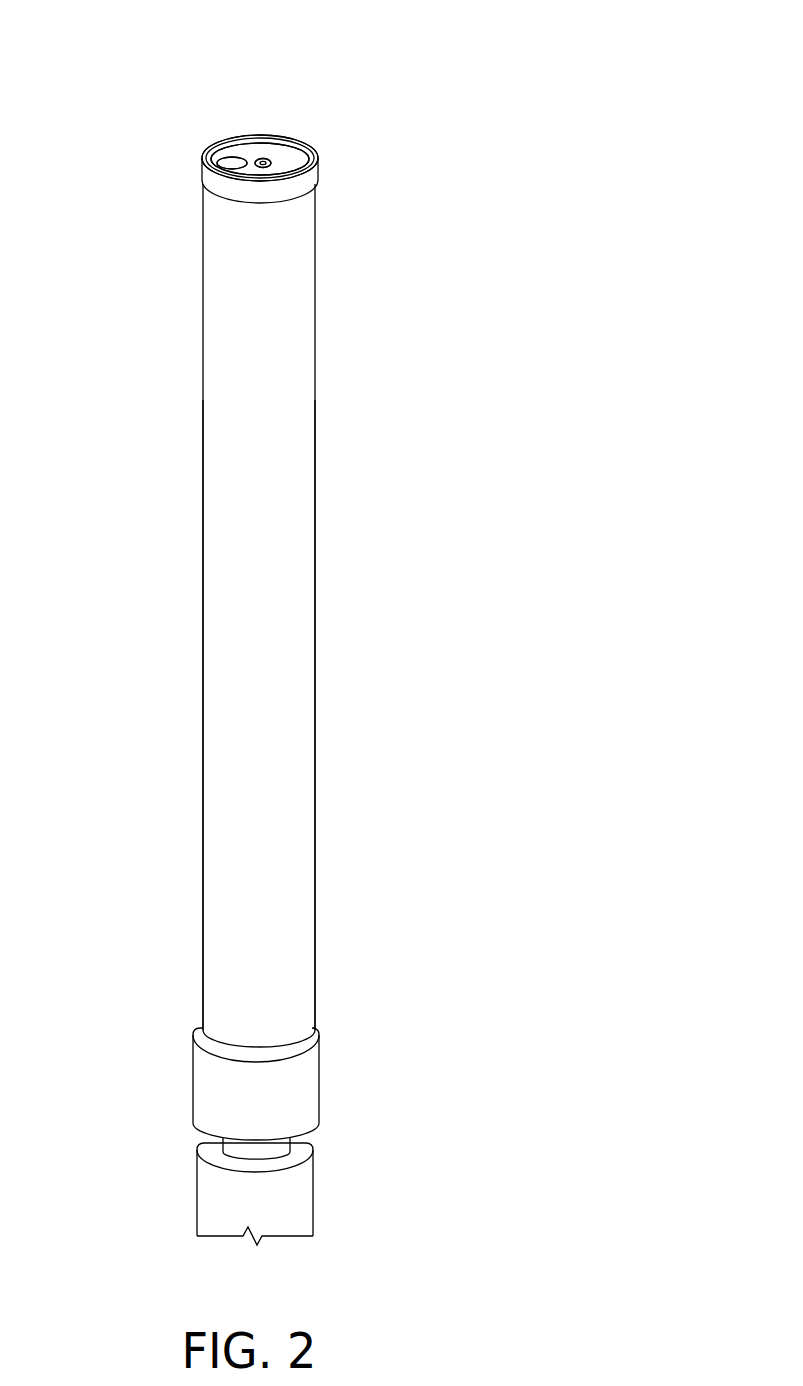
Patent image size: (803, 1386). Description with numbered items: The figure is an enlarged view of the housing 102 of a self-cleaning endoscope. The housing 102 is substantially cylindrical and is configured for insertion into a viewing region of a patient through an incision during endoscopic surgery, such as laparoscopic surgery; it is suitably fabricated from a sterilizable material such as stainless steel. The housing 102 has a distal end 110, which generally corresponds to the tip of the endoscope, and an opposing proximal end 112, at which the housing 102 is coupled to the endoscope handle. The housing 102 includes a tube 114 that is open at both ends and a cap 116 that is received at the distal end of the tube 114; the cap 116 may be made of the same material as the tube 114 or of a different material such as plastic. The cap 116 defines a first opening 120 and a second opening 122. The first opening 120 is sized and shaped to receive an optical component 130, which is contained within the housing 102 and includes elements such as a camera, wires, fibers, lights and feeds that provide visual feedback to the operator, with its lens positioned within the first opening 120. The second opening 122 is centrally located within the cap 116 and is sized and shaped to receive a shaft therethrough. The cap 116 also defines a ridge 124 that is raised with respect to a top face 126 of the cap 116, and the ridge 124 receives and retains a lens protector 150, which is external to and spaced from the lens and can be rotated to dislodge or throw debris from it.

The housing 102 is at (160, 672).
The distal end 110 is at (318, 168).
The proximal end 112 is at (315, 1033).
The tube 114 is at (220, 832).
The cap 116 is at (200, 173).
The first opening 120 is at (242, 150).
The second opening 122 is at (268, 160).
The ridge 124 is at (307, 147).
The top face 126 is at (258, 156).
The optical component 130 is at (228, 160).
The lens protector 150 is at (287, 165).